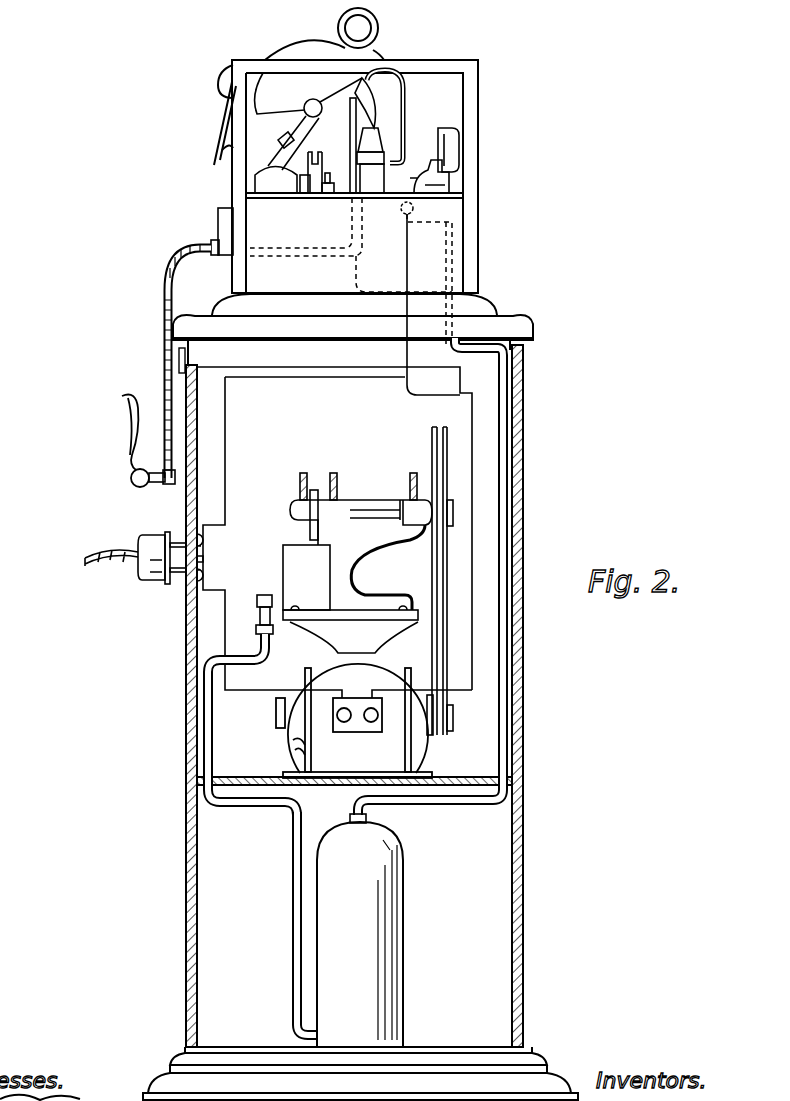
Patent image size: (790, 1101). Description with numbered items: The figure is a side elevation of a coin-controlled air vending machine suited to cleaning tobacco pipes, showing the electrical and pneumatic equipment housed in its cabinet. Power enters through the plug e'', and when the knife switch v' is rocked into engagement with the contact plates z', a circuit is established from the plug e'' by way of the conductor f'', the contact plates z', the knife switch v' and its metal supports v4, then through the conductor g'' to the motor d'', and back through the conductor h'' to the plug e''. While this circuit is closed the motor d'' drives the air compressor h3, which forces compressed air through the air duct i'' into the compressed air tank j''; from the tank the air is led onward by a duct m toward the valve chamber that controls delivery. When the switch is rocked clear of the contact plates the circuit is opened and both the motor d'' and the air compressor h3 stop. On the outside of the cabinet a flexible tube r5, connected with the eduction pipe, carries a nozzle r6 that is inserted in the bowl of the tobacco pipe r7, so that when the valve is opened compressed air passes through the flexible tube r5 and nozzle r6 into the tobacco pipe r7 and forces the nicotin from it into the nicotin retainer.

The contact plates z' is at (482, 142).
The knife switch v' is at (493, 181).
The metal supports v4 is at (420, 210).
The conductor g'' is at (503, 474).
The conductor f'' is at (337, 537).
The air compressor h3 is at (356, 545).
The motor d'' is at (223, 721).
The conductor h'' is at (200, 705).
The air duct i'' is at (275, 923).
The pipe m is at (447, 805).
The compressed air tank j'' is at (360, 930).
The flexible tube r5 is at (163, 293).
The nozzle r6 is at (135, 462).
The tobacco pipe r7 is at (125, 470).
The plug e'' is at (135, 540).